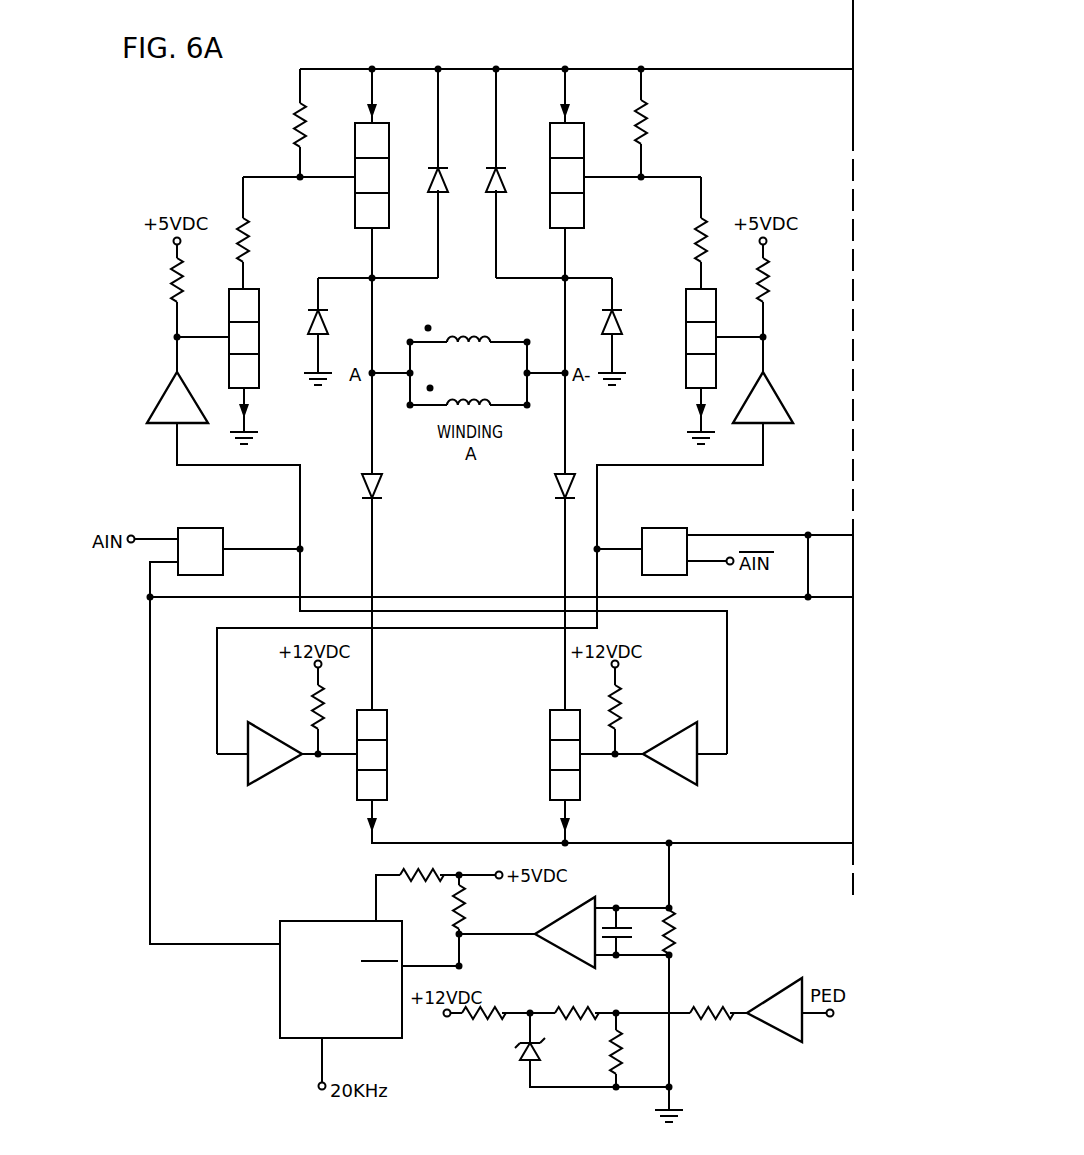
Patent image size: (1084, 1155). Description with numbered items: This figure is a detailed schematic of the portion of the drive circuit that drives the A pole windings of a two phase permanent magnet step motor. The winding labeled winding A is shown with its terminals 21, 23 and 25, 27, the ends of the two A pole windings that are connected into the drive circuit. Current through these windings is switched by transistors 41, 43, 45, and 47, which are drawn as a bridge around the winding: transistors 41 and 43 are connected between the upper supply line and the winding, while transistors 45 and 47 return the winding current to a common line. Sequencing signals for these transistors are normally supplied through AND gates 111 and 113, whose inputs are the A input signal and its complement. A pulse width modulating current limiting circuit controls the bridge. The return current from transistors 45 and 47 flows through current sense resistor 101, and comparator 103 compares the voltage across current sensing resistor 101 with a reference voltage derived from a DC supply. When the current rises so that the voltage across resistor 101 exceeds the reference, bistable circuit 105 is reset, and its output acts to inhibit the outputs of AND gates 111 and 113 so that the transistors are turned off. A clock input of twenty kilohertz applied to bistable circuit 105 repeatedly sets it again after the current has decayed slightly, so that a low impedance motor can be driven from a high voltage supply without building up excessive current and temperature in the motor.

The winding terminal 21 is at (410, 342).
The winding terminal 23 is at (527, 342).
The winding terminal 25 is at (410, 405).
The winding terminal 27 is at (527, 405).
The transistor 41 is at (355, 212).
The transistor 43 is at (584, 217).
The transistor 45 is at (387, 762).
The transistor 47 is at (550, 750).
The current sense resistor 101 is at (678, 922).
The comparator 103 is at (578, 904).
The bistable circuit 105 is at (280, 1007).
The AND gate 111 is at (205, 528).
The AND gate 113 is at (660, 528).